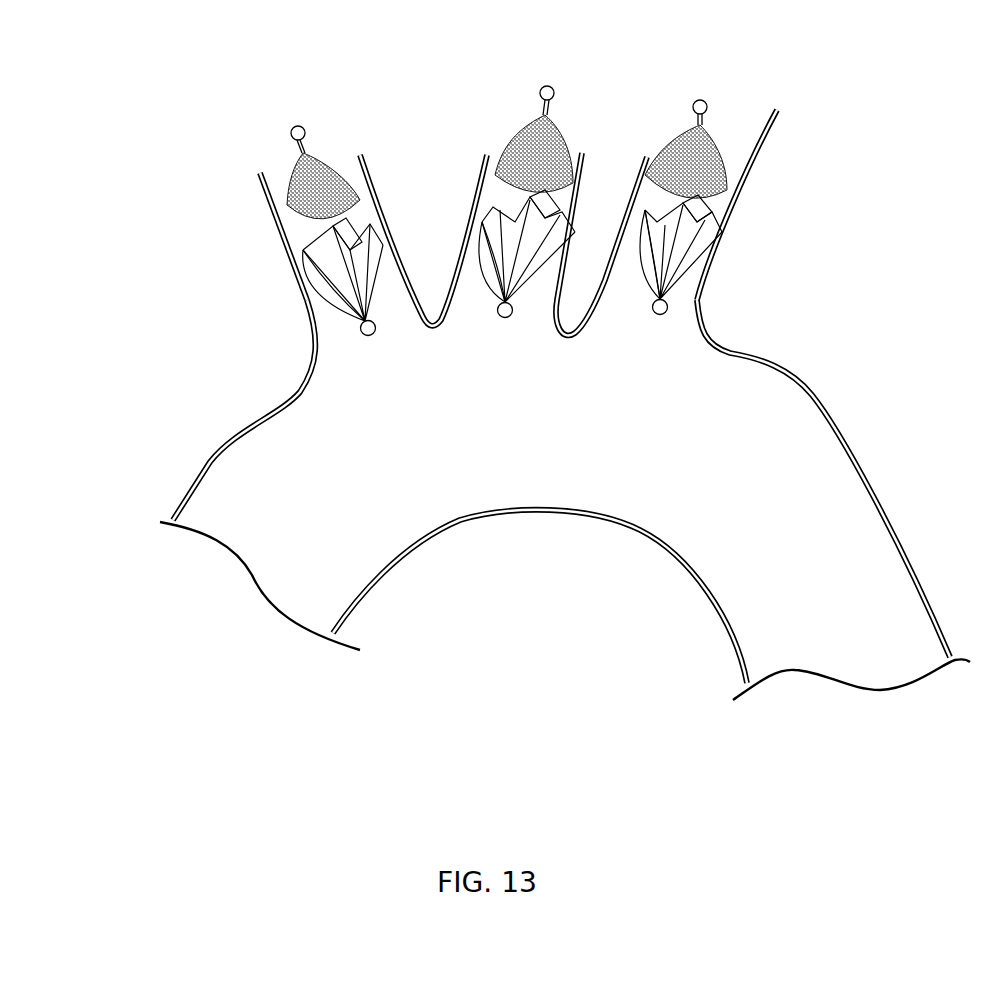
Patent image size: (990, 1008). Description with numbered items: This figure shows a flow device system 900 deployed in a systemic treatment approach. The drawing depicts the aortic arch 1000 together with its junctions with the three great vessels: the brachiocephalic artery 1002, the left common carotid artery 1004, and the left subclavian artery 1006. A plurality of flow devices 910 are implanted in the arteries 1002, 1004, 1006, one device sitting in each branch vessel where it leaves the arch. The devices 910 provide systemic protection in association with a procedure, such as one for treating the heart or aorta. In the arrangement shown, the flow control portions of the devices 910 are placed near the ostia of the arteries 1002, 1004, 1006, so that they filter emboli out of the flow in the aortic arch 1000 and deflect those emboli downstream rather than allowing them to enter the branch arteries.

The flow device system 900 is at (222, 98).
The flow device 910 is at (297, 200).
The aortic arch 1000 is at (532, 518).
The brachiocephalic artery 1002 is at (297, 267).
The left common carotid artery 1004 is at (566, 226).
The left subclavian artery 1006 is at (750, 177).